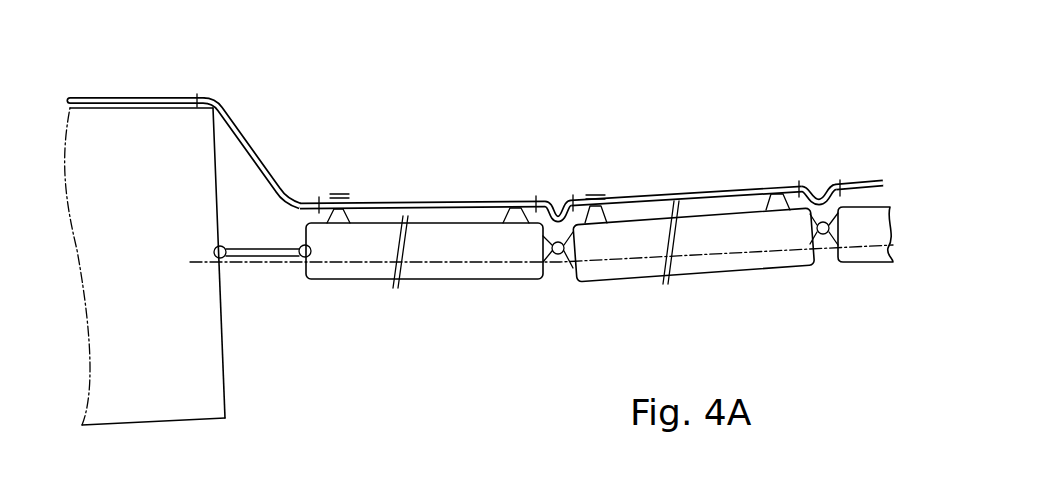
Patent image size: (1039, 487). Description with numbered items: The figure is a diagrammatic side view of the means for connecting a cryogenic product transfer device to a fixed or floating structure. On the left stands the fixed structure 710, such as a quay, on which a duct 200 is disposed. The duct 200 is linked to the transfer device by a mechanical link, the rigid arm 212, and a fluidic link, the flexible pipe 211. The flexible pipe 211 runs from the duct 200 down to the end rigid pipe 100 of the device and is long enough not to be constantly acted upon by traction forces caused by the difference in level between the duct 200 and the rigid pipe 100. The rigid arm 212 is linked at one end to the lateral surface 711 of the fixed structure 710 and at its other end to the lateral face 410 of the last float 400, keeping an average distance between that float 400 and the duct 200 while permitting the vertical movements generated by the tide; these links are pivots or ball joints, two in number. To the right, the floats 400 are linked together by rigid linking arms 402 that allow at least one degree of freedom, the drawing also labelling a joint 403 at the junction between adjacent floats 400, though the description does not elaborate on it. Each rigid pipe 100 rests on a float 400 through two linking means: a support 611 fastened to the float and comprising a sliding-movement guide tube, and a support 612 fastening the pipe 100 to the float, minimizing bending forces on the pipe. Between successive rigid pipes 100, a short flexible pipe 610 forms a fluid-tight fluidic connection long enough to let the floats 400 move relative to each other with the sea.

The rigid pipe 100 is at (432, 194).
The duct 200 is at (137, 87).
The flexible pipe 211 is at (255, 122).
The rigid arm 212 is at (230, 246).
The float 400 is at (473, 247).
The rigid linking arm 402 is at (597, 280).
The coupling joint 403 is at (548, 246).
The lateral face 410 is at (301, 233).
The flexible pipe 610 is at (549, 204).
The support with sliding-movement guide tube 611 is at (340, 182).
The support 612 is at (517, 199).
The fixed structure 710 is at (203, 357).
The lateral surface 711 is at (226, 297).